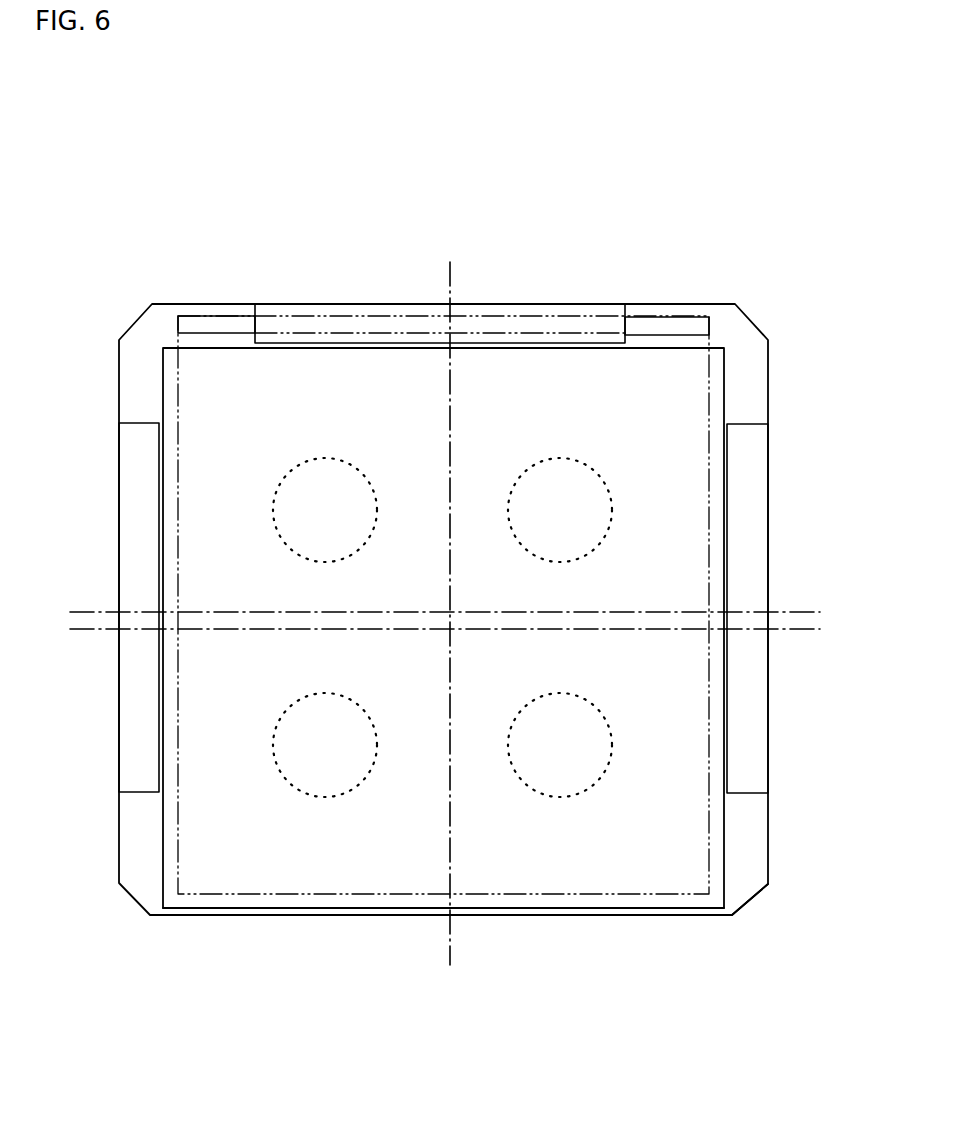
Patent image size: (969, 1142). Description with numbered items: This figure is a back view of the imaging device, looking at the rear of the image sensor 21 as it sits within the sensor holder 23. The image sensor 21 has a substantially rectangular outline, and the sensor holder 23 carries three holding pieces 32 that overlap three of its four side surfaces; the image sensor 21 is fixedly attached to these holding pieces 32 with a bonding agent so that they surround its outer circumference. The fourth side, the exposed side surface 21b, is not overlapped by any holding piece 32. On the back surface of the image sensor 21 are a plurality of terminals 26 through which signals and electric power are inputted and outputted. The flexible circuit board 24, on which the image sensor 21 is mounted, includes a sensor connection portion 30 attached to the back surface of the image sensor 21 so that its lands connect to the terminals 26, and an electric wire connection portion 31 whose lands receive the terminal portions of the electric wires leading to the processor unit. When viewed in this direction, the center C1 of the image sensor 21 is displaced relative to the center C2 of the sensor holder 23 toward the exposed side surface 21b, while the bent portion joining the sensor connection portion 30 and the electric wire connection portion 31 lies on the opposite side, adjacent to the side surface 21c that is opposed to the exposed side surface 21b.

The image sensor 21 is at (726, 372).
The exposed side surface 21b is at (378, 908).
The side surface 21c is at (210, 348).
The sensor holder 23 is at (747, 898).
The flexible circuit board 24 is at (643, 181).
The terminals 26 is at (312, 458).
The sensor connection portion 30 is at (706, 420).
The electric wire connection portion 31 is at (513, 304).
The holding pieces 32 is at (140, 423).
The center of the image sensor C1 is at (450, 629).
The center of the sensor holder C2 is at (450, 612).